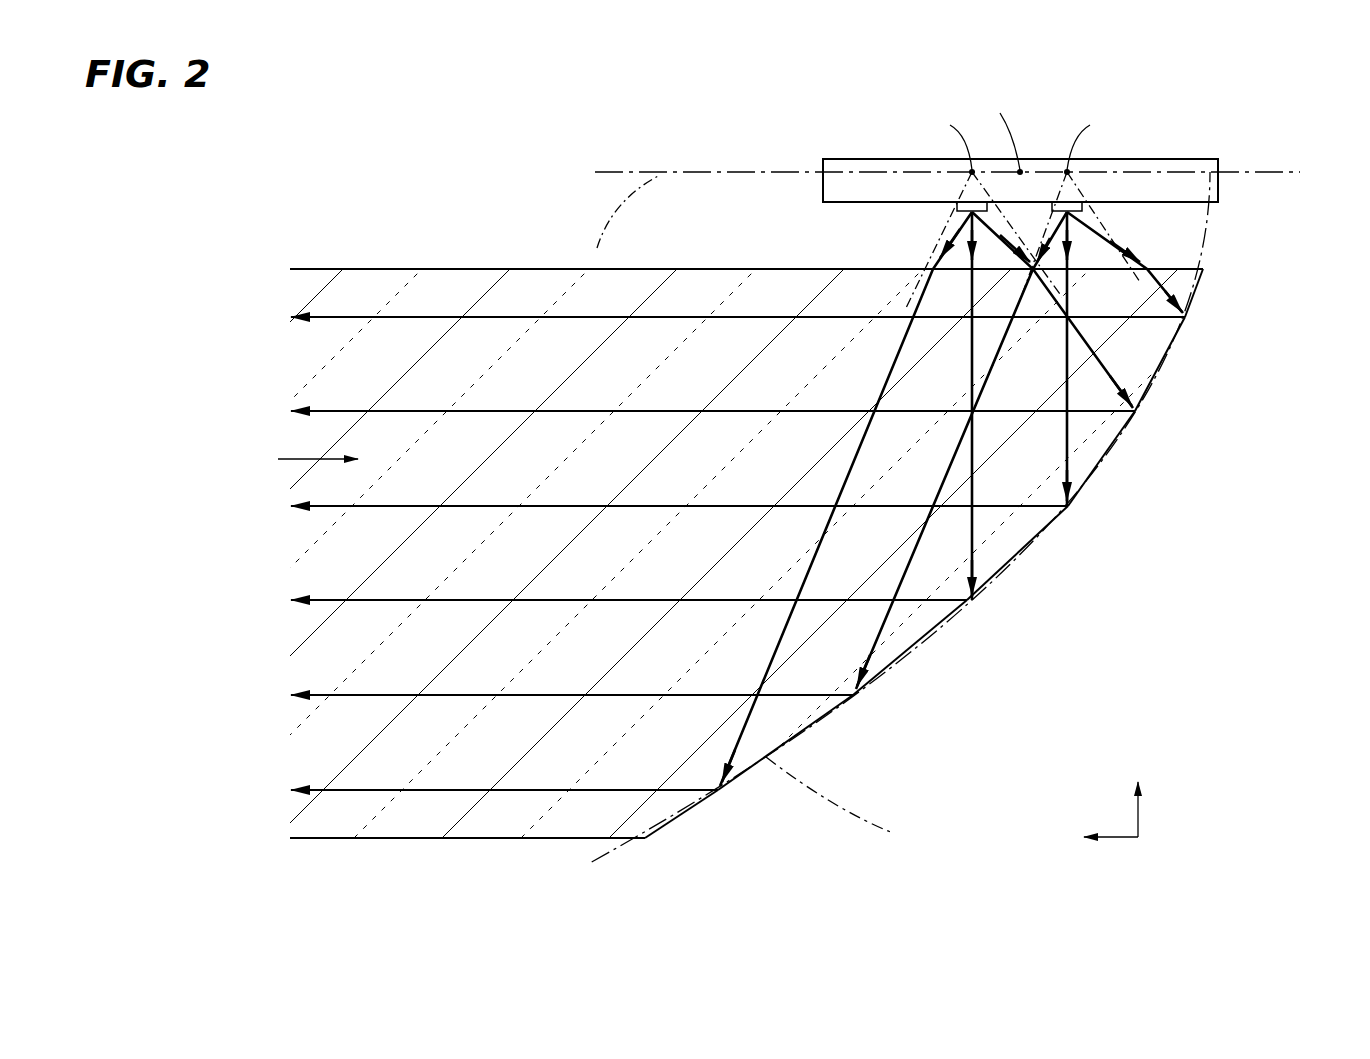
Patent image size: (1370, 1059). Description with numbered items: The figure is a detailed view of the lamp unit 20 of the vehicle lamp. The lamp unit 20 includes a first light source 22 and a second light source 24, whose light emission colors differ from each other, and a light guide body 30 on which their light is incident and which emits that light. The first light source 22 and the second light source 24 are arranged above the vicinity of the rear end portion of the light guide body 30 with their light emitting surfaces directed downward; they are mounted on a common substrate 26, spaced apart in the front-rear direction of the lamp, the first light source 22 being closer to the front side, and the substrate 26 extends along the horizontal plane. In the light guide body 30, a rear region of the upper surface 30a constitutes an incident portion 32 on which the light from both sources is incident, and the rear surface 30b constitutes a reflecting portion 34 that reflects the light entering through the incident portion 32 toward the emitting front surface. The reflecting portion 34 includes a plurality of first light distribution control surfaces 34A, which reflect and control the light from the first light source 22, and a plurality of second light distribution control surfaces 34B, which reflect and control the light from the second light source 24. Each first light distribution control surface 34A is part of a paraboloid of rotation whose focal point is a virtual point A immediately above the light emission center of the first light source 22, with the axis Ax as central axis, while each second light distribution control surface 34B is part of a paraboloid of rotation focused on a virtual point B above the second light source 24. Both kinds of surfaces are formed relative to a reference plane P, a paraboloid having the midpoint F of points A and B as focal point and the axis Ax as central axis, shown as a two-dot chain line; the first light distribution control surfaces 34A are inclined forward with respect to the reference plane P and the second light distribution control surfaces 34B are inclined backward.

The lamp unit 20 is at (1166, 697).
The first light source 22 is at (965, 193).
The second light source 24 is at (1077, 193).
The substrate 26 is at (820, 192).
The light guide body 30 is at (381, 244).
The upper surface 30a is at (518, 268).
The rear surface 30b is at (1192, 305).
The incident portion 32 is at (1085, 266).
The reflecting portion 34 is at (1090, 504).
The first light distribution control surfaces 34A is at (1128, 435).
The second light distribution control surfaces 34B is at (1177, 333).